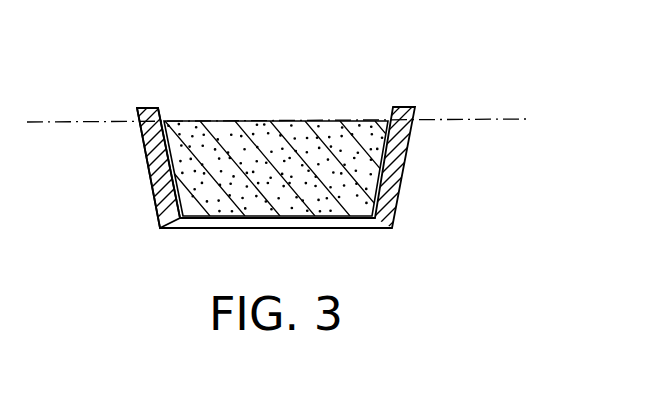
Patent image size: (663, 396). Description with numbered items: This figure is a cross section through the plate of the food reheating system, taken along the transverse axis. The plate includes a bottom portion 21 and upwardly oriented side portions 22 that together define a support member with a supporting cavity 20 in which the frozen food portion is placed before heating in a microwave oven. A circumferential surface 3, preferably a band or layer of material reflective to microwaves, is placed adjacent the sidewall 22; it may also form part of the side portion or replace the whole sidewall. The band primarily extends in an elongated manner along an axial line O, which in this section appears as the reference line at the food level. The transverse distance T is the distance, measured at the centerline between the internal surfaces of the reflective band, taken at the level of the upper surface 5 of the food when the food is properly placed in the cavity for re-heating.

The supporting cavity 20 is at (196, 208).
The side portions 22 is at (150, 183).
The upper surface of the food 5 is at (350, 120).
The bottom portion 21 is at (377, 239).
The circumferential surface 3 is at (424, 107).
The transverse distance T is at (405, 65).
The axial line O is at (72, 154).